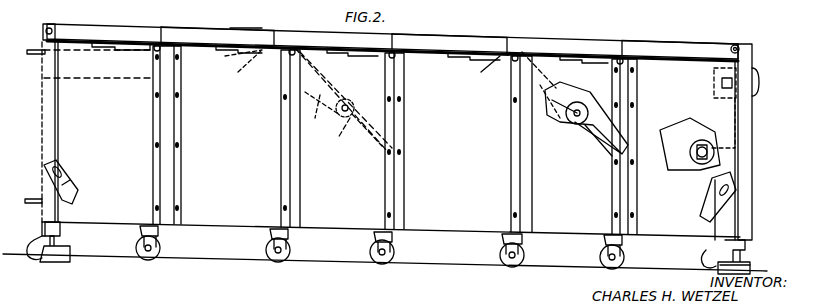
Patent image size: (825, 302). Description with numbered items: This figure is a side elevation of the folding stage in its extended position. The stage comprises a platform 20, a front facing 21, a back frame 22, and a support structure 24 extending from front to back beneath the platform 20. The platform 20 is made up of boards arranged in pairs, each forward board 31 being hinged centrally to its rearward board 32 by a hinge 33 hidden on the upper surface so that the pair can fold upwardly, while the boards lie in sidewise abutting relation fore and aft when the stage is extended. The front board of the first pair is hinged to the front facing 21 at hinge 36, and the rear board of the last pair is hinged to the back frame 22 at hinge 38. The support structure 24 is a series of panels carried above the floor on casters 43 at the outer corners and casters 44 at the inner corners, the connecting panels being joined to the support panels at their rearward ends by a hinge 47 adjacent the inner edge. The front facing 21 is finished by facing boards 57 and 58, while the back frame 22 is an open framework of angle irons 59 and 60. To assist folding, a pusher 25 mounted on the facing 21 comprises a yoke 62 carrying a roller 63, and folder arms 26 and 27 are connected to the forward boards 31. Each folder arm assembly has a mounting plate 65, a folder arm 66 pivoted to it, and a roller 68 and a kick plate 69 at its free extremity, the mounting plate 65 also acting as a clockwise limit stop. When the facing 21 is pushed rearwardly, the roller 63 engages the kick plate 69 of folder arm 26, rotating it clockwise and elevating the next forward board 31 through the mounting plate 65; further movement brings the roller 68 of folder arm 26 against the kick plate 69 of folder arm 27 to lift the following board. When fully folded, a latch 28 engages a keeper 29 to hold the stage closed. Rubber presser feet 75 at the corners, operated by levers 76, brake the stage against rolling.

The platform 20 is at (255, 23).
The front facing 21 is at (754, 66).
The back frame 22 is at (40, 90).
The support structure 24 is at (352, 239).
The pusher 25 is at (698, 164).
The folder arm 26 is at (590, 130).
The folder arm 27 is at (355, 124).
The latch 28 is at (712, 88).
The keeper 29 is at (132, 80).
The forward board 31 is at (201, 27).
The rearward board 32 is at (118, 15).
The hinge 33 is at (190, 55).
The hinge 36 is at (737, 44).
The hinge 38 is at (50, 22).
The caster 43 is at (32, 240).
The caster 44 is at (136, 248).
The hinge 47 is at (172, 143).
The facing board 57 is at (753, 120).
The facing board 58 is at (754, 200).
The angle iron 59 is at (30, 50).
The angle iron 60 is at (28, 199).
The yoke 62 is at (712, 142).
The roller 63 is at (690, 152).
The mounting plate 65 is at (362, 68).
The folder arm 66 is at (553, 130).
The roller 68 is at (352, 104).
The kick plate 69 is at (372, 135).
The presser foot 75 is at (52, 262).
The lever 76 is at (76, 196).